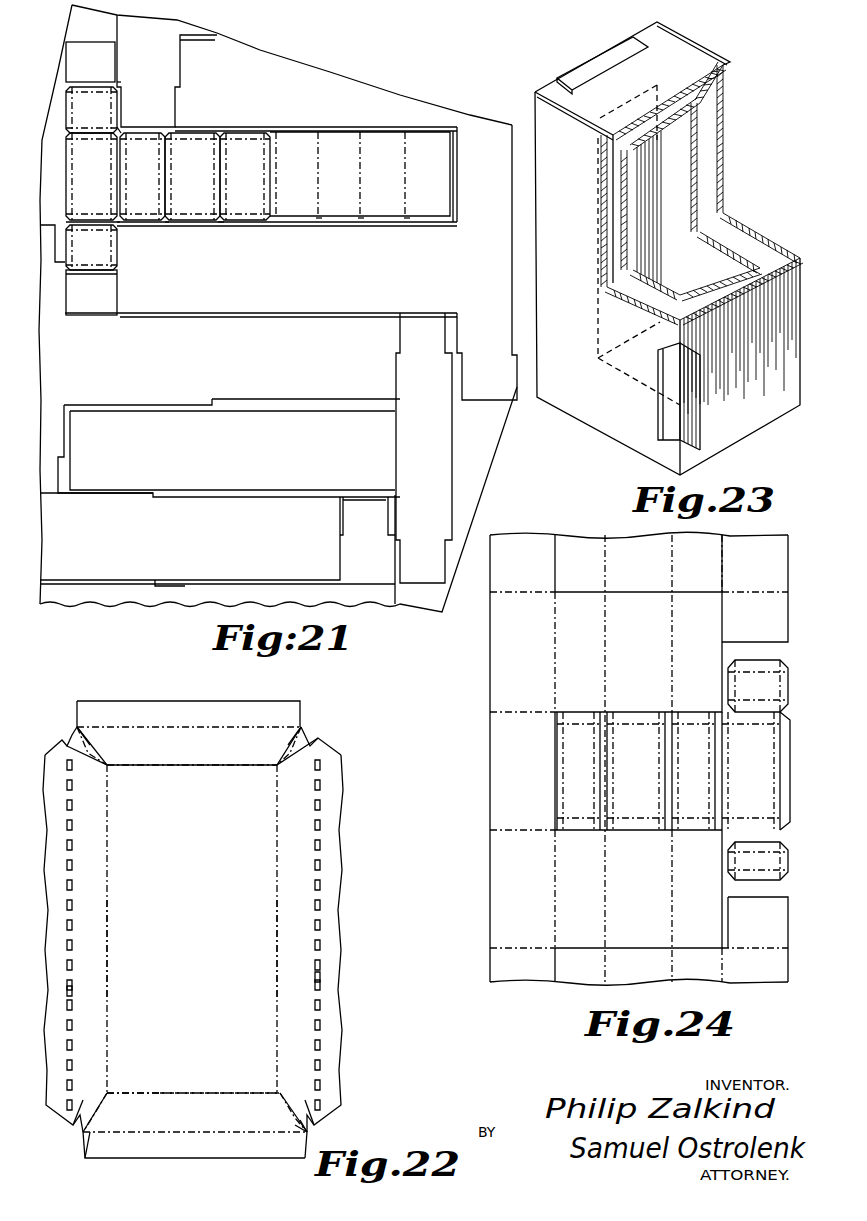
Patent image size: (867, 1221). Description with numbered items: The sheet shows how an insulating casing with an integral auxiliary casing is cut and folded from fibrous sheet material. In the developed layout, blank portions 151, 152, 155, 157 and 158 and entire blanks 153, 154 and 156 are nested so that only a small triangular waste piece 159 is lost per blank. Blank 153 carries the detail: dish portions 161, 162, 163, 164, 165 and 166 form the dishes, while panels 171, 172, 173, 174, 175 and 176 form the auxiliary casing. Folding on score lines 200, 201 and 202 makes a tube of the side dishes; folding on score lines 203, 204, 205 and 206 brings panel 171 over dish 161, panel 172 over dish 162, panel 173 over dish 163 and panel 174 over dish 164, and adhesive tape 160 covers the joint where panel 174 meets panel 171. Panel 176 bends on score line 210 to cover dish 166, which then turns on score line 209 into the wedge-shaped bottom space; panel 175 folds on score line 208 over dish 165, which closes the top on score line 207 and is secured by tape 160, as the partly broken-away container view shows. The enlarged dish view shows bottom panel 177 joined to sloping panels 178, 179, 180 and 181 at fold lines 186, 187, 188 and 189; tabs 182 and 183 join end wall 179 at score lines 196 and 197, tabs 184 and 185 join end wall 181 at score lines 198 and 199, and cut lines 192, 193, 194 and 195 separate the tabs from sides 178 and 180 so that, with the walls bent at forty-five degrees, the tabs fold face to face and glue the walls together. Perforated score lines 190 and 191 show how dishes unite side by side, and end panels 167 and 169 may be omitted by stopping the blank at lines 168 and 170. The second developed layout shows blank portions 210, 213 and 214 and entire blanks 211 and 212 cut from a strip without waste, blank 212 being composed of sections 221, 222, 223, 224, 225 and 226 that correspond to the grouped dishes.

In FIG. 21, the blank portion 151 is at (167, 71).
In FIG. 21, the blank portion 152 is at (316, 85).
In FIG. 21, the blank 153 is at (450, 140).
In FIG. 21, the blank 154 is at (261, 292).
In FIG. 21, the blank portion 155 is at (332, 448).
In FIG. 21, the blank 156 is at (229, 448).
In FIG. 21, the blank portion 157 is at (217, 539).
In FIG. 21, the blank portion 158 is at (364, 544).
In FIG. 21, the waste piece 159 is at (464, 426).
In FIG. 23, the adhesively prepared tape 160 is at (595, 48).
In FIG. 21, the dish portion 161 is at (91, 176).
In FIG. 23, the dish portion 161 is at (612, 207).
In FIG. 21, the dish portion 162 is at (142, 176).
In FIG. 23, the dish portion 162 is at (650, 194).
In FIG. 21, the dish portion 163 is at (192, 176).
In FIG. 23, the dish portion 163 is at (732, 170).
In FIG. 21, the dish portion 164 is at (245, 176).
In FIG. 23, the dish portion 164 is at (705, 280).
In FIG. 21, the dish portion 165 is at (91, 110).
In FIG. 23, the dish portion 165 is at (698, 120).
In FIG. 21, the dish portion 166 is at (78, 247).
In FIG. 23, the dish portion 166 is at (700, 360).
In FIG. 22, the panel 167 is at (183, 712).
In FIG. 22, the line 168 is at (304, 736).
In FIG. 22, the panel 169 is at (195, 1145).
In FIG. 22, the line 170 is at (308, 1132).
In FIG. 21, the auxiliary casing panel 171 is at (294, 174).
In FIG. 23, the auxiliary casing panel 171 is at (667, 283).
In FIG. 21, the auxiliary casing panel 172 is at (339, 174).
In FIG. 21, the auxiliary casing panel 173 is at (382, 174).
In FIG. 23, the auxiliary casing panel 173 is at (755, 233).
In FIG. 21, the auxiliary casing panel 174 is at (427, 174).
In FIG. 23, the auxiliary casing panel 174 is at (741, 336).
In FIG. 21, the top panel 175 is at (90, 62).
In FIG. 23, the top panel 175 is at (662, 96).
In FIG. 21, the bottom panel 176 is at (91, 292).
In FIG. 22, the bottom panel 177 is at (193, 929).
In FIG. 22, the sloping side wall panel 178 is at (92, 873).
In FIG. 22, the sloping end wall panel 179 is at (203, 764).
In FIG. 22, the sloping side wall panel 180 is at (284, 822).
In FIG. 22, the sloping end wall panel 181 is at (212, 1092).
In FIG. 22, the tab 182 is at (90, 748).
In FIG. 22, the tab 183 is at (298, 745).
In FIG. 22, the tab 184 is at (92, 1114).
In FIG. 22, the tab 185 is at (298, 1120).
In FIG. 22, the fold line 186 is at (110, 950).
In FIG. 22, the fold line 187 is at (150, 766).
In FIG. 22, the fold line 188 is at (276, 912).
In FIG. 22, the fold line 189 is at (140, 1092).
In FIG. 22, the perforated score line 190 is at (75, 991).
In FIG. 22, the perforated score line 191 is at (320, 977).
In FIG. 22, the cut line 192 is at (73, 742).
In FIG. 22, the cut line 193 is at (322, 752).
In FIG. 22, the cut line 194 is at (95, 1090).
In FIG. 22, the cut line 195 is at (312, 1108).
In FIG. 22, the score line 196 is at (97, 728).
In FIG. 22, the score line 197 is at (275, 757).
In FIG. 22, the score line 198 is at (88, 1152).
In FIG. 22, the score line 199 is at (300, 1128).
In FIG. 21, the score line 200 is at (118, 224).
In FIG. 21, the score line 201 is at (167, 224).
In FIG. 21, the score line 202 is at (221, 224).
In FIG. 21, the score line 203 is at (270, 224).
In FIG. 21, the score line 204 is at (320, 224).
In FIG. 21, the score line 205 is at (362, 224).
In FIG. 21, the score line 206 is at (408, 222).
In FIG. 21, the score line 207 is at (121, 130).
In FIG. 21, the score line 208 is at (117, 84).
In FIG. 21, the score line 209 is at (90, 228).
In FIG. 21, the score line 210 is at (110, 279).
In FIG. 24, the score line 210 is at (780, 572).
In FIG. 24, the blank 211 is at (490, 686).
In FIG. 24, the blank 212 is at (788, 788).
In FIG. 24, the blank portion 213 is at (490, 863).
In FIG. 24, the blank portion 214 is at (780, 954).
In FIG. 24, the section 221 is at (751, 771).
In FIG. 24, the section 222 is at (693, 771).
In FIG. 24, the section 223 is at (636, 771).
In FIG. 24, the section 224 is at (638, 771).
In FIG. 24, the section 225 is at (758, 686).
In FIG. 24, the section 226 is at (758, 861).